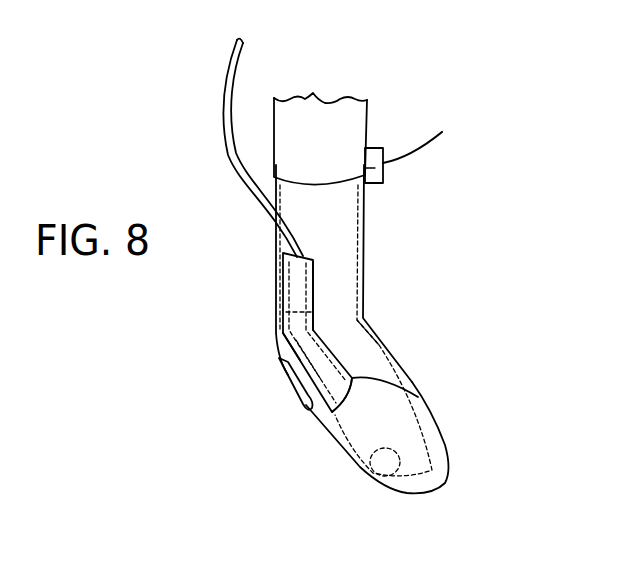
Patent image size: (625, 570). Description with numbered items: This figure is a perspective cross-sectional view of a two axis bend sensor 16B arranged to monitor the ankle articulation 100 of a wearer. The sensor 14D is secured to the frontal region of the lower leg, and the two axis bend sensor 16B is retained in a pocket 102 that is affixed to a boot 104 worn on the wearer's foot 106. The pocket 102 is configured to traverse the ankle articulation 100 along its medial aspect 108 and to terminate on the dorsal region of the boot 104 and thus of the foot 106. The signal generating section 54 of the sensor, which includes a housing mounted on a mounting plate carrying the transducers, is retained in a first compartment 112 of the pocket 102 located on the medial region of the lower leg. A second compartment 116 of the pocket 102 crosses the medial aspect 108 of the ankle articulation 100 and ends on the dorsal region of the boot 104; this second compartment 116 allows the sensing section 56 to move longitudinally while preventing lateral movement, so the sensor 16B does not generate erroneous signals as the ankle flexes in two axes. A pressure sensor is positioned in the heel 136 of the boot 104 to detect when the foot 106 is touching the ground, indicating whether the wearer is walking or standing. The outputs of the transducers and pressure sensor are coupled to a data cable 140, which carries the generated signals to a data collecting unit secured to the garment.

The data cable 140 is at (232, 68).
The sensor 14D is at (383, 165).
The signal generating section 54 is at (313, 282).
The ankle articulation 100 is at (337, 316).
The first compartment 112 is at (292, 288).
The medial aspect 108 is at (280, 348).
The sensing section 56 is at (313, 357).
The heel 136 is at (288, 390).
The second compartment 116 is at (340, 400).
The two axis bend sensor 16B is at (352, 356).
The pocket 102 is at (420, 393).
The boot 104 is at (450, 457).
The foot 106 is at (363, 463).